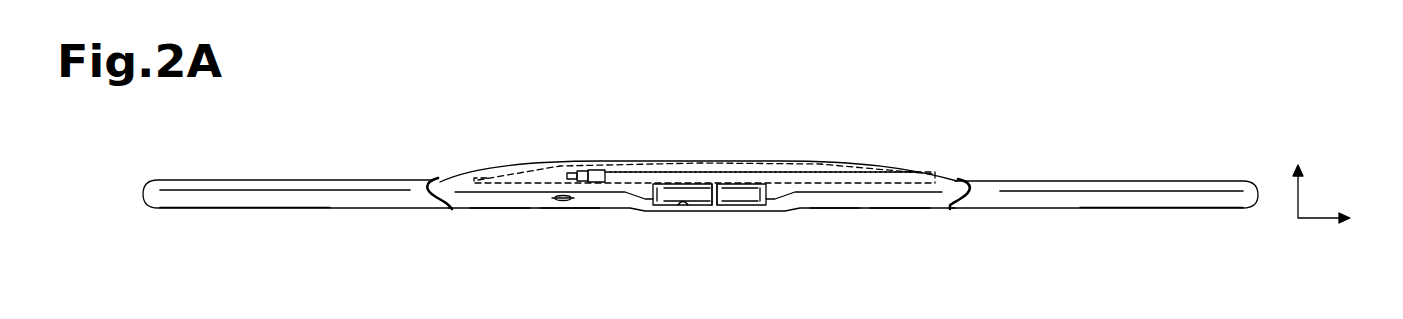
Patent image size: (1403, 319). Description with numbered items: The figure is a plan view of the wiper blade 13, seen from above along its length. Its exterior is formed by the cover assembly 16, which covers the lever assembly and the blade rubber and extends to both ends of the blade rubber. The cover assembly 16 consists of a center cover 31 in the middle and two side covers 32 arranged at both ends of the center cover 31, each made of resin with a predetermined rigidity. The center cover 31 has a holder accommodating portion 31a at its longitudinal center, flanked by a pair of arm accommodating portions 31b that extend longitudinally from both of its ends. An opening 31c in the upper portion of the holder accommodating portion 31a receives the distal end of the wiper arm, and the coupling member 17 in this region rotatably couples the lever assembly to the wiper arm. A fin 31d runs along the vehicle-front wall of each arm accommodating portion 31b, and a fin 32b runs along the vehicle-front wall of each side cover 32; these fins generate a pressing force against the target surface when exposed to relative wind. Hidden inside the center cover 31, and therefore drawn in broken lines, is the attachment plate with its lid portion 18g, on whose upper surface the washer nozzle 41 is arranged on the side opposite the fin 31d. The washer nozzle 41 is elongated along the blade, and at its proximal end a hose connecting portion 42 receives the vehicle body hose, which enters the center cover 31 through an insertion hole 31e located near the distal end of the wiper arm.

The wiper blade 13 is at (1035, 143).
The cover assembly 16 is at (935, 179).
The coupling member 17 is at (727, 207).
The lid portion 18g is at (652, 165).
The center cover 31 is at (814, 164).
The holder accommodating portion 31a is at (657, 211).
The arm accommodating portion 31b is at (563, 210).
The opening 31c is at (683, 207).
The fin 31d is at (503, 209).
The insertion hole 31e is at (562, 195).
The side cover 32 is at (348, 179).
The fin 32b is at (318, 209).
The washer nozzle 41 is at (683, 172).
The hose connecting portion 42 is at (575, 168).